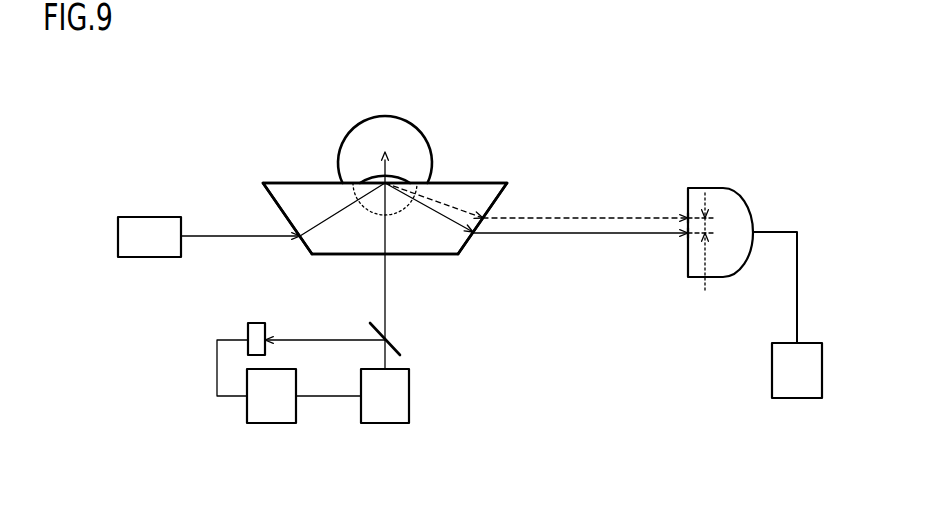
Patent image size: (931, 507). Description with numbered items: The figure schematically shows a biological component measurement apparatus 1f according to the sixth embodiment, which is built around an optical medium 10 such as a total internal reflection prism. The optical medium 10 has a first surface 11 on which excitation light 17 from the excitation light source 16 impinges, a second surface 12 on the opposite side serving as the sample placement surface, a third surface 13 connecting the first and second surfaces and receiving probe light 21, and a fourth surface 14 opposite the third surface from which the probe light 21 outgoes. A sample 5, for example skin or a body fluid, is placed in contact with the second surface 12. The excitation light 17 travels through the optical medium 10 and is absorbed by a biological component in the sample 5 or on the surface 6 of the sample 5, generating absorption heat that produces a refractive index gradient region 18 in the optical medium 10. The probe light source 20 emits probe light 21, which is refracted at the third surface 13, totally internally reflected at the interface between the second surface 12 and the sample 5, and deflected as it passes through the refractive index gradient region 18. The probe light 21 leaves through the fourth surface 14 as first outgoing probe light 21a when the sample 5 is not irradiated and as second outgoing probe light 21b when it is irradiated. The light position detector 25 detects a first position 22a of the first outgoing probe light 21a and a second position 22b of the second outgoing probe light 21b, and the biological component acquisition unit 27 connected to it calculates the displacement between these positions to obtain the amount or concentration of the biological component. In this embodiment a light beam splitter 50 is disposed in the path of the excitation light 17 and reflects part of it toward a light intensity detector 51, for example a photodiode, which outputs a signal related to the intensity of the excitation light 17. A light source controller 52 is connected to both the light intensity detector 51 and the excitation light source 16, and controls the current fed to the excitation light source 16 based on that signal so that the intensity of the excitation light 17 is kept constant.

The biological component measurement apparatus 1f is at (795, 98).
The sample 5 is at (411, 116).
The surface of sample 6 is at (345, 194).
The optical medium 10 is at (323, 245).
The first surface 11 is at (436, 256).
The second surface 12 is at (468, 181).
The third surface 13 is at (272, 200).
The fourth surface 14 is at (508, 193).
The excitation light source 16 is at (415, 398).
The excitation light 17 is at (390, 322).
The refractive index gradient region 18 is at (367, 207).
The probe light source 20 is at (156, 215).
The probe light 21 is at (228, 240).
The first outgoing probe light 21a is at (607, 237).
The second outgoing probe light 21b is at (613, 215).
The first position 22a is at (686, 236).
The second position 22b is at (686, 217).
The light position detector 25 is at (708, 187).
The biological component acquisition unit 27 is at (770, 376).
The light beam splitter 50 is at (404, 348).
The light intensity detector 51 is at (252, 320).
The light source controller 52 is at (272, 425).